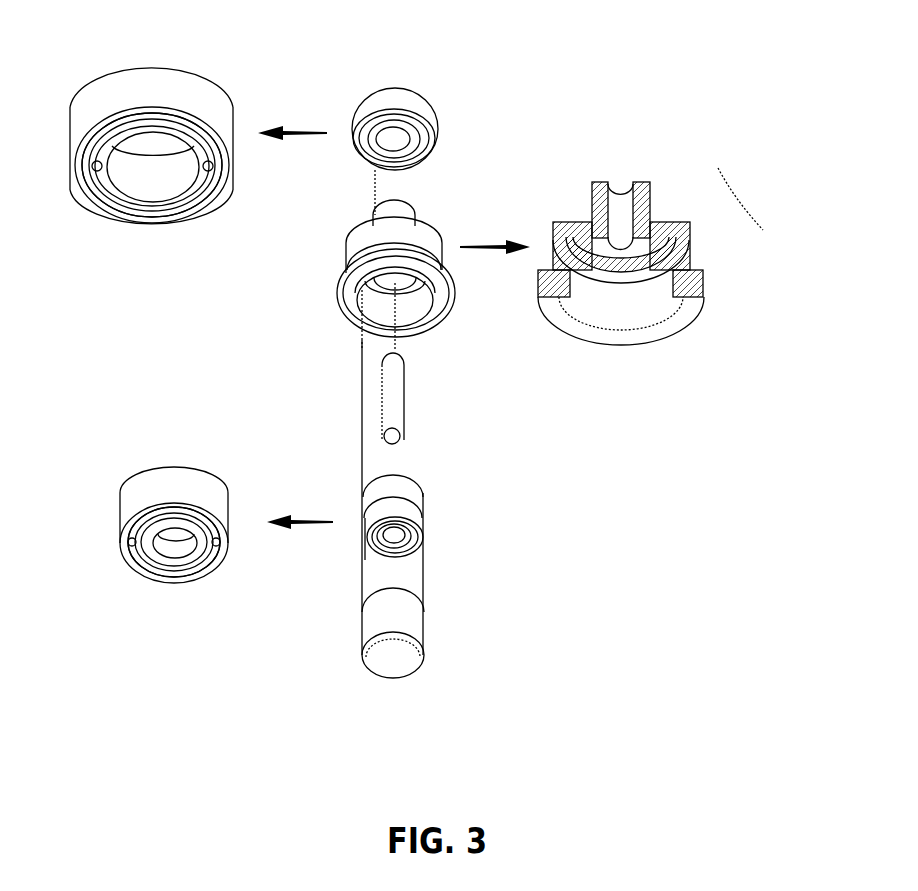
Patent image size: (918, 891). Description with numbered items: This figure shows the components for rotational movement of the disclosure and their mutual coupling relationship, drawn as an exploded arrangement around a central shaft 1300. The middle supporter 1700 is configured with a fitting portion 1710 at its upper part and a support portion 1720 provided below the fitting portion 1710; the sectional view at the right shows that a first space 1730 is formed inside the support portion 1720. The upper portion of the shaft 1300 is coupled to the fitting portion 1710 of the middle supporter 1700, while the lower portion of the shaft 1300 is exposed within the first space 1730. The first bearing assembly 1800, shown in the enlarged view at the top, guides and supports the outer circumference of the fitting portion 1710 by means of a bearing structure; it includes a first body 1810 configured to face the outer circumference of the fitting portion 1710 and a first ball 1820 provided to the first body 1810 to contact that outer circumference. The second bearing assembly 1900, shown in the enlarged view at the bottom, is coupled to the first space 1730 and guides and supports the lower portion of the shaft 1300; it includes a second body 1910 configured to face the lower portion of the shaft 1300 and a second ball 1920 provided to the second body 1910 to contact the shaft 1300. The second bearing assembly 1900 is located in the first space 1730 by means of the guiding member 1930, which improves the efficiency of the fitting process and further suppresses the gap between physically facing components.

The shaft 1300 is at (408, 390).
The middle supporter 1700 is at (426, 232).
The fitting portion 1710 is at (652, 202).
The support portion 1720 is at (690, 258).
The first space 1730 is at (622, 305).
The first bearing assembly 1800 is at (231, 77).
The first body 1810 is at (163, 225).
The first ball 1820 is at (240, 207).
The second bearing assembly 1900 is at (422, 516).
The second body 1910 is at (178, 573).
The second ball 1920 is at (130, 540).
The guiding member 1930 is at (415, 625).